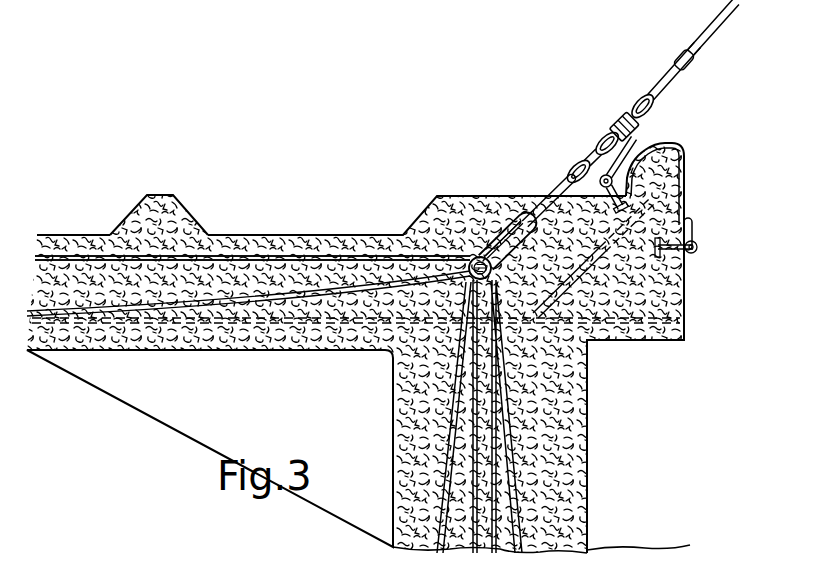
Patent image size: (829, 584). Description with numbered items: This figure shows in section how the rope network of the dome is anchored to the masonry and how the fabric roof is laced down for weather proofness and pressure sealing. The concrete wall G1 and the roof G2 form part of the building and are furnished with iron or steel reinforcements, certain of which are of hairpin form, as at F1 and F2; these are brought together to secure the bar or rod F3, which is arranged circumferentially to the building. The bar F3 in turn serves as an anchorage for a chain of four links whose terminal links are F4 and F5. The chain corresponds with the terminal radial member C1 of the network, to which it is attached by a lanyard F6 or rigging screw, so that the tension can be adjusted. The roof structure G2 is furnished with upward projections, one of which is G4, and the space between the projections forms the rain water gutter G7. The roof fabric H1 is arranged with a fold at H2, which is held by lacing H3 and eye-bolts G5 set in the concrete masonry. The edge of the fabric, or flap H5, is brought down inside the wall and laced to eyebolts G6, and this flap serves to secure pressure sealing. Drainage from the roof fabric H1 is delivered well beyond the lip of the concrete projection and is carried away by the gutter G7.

The terminal radial member C1 is at (692, 45).
The hairpin reinforcement bar F1 is at (332, 258).
The hairpin reinforcement bar F2 is at (493, 553).
The circumferential bar F3 is at (477, 258).
The terminal chain link F4 is at (503, 230).
The terminal chain link F5 is at (588, 157).
The lanyard F6 is at (626, 120).
The concrete wall G1 is at (410, 402).
The roof G2 is at (213, 347).
The upward projection G4 is at (173, 197).
The eye-bolt G5 is at (652, 207).
The eyebolt G6 is at (688, 252).
The rain water gutter G7 is at (262, 237).
The roof fabric H1 is at (703, 55).
The fold H2 is at (630, 153).
The lacing H3 is at (636, 167).
The flap H5 is at (700, 212).